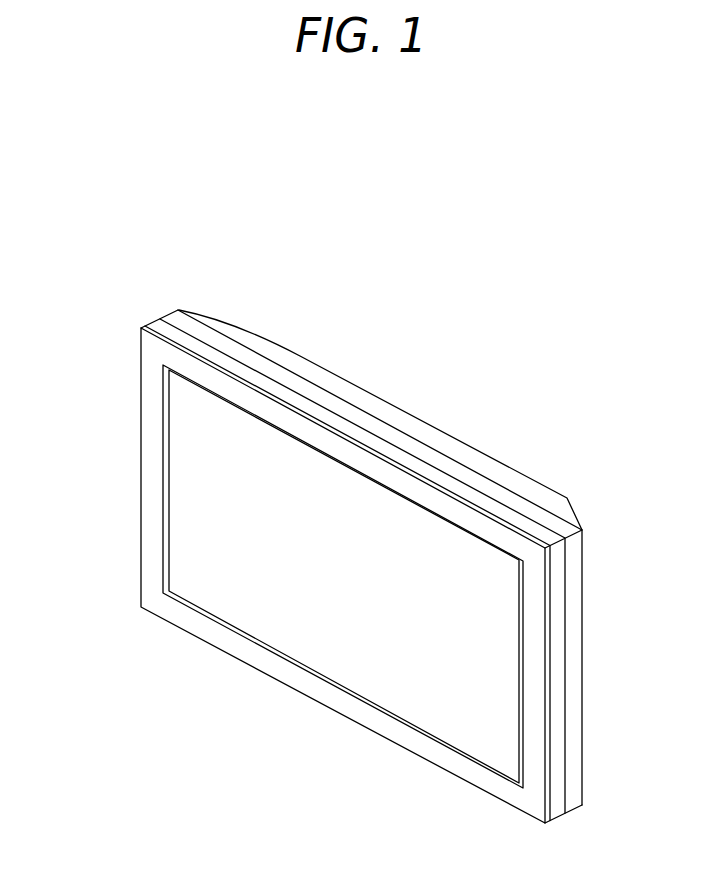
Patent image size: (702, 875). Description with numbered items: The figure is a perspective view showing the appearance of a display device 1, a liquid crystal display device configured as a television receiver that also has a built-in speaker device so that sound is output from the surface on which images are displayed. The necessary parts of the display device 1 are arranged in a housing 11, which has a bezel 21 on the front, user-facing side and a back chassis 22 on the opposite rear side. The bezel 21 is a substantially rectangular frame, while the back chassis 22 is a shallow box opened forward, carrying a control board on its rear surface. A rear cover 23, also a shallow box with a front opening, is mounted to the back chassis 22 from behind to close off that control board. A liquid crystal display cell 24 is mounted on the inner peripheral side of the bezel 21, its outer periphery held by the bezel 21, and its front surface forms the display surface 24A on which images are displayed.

The display device 1 is at (138, 248).
The housing 11 is at (385, 410).
The bezel 21 is at (148, 350).
The back chassis 22 is at (243, 372).
The rear cover 23 is at (320, 375).
The liquid crystal display cell 24 is at (185, 443).
The display surface 24A is at (185, 505).